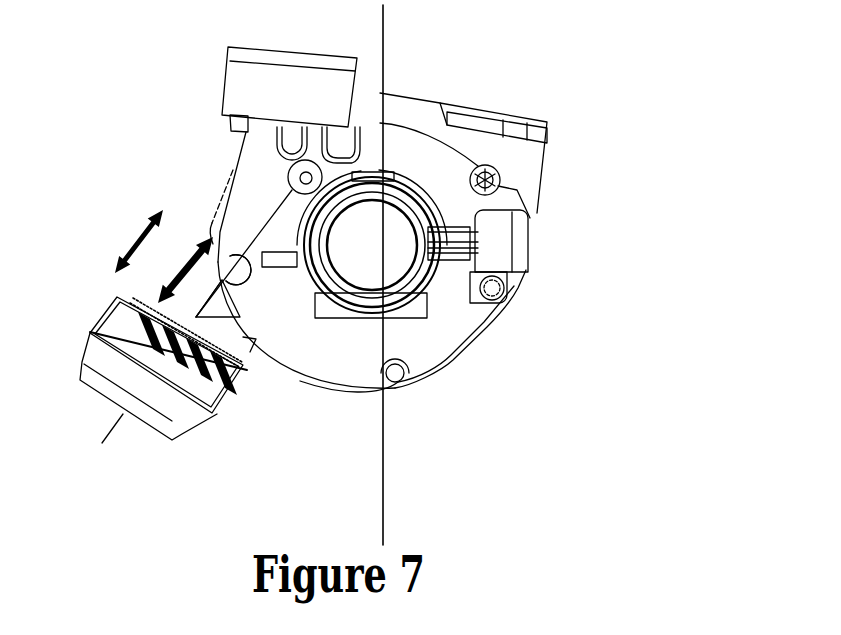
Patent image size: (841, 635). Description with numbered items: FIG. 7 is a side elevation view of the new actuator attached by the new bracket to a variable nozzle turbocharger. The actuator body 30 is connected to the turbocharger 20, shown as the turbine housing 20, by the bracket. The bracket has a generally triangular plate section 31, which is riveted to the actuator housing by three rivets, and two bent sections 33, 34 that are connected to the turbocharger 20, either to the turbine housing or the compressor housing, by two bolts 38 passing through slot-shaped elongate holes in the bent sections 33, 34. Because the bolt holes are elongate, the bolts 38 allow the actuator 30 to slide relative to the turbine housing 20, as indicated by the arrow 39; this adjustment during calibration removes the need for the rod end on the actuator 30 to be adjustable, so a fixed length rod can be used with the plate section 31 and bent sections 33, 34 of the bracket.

The turbocharger 20 is at (440, 347).
The actuator body 30 is at (179, 434).
The plate section 31 is at (222, 280).
The bent section 33 is at (204, 298).
The bent section 34 is at (229, 262).
The bolts 38 is at (196, 244).
The arrow 39 is at (162, 212).